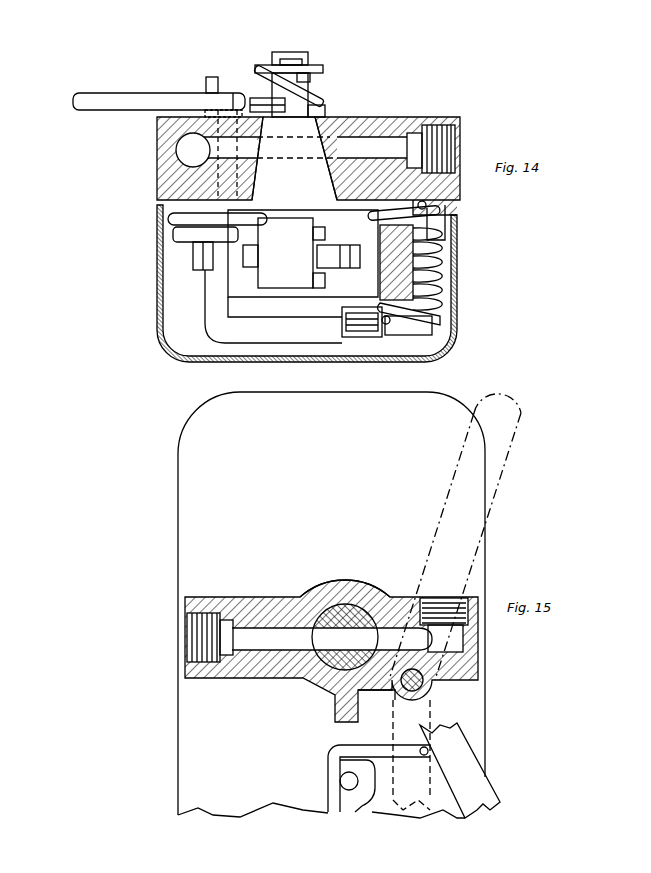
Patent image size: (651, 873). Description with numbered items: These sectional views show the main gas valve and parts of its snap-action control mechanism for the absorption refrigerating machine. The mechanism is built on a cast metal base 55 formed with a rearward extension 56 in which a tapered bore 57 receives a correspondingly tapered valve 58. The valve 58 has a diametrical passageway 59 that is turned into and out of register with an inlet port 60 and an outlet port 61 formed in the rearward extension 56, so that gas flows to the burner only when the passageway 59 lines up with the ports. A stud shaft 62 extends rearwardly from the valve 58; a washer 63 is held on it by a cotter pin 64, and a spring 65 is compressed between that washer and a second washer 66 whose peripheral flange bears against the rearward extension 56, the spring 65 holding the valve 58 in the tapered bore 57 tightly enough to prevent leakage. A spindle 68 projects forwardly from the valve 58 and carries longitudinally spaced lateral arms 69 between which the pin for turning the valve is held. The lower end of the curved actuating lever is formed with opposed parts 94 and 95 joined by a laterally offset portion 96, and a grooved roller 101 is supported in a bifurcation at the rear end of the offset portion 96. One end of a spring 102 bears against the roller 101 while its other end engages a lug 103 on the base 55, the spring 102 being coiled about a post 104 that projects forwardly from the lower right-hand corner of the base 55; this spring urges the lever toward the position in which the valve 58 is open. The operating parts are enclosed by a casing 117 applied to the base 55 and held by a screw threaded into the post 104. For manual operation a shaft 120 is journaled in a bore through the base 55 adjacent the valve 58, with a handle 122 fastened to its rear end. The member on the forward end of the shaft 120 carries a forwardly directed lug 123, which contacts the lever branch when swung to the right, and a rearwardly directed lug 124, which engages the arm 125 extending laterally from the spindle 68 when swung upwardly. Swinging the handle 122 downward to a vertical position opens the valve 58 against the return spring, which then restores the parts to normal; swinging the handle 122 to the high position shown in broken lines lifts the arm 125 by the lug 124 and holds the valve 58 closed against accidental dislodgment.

In FIG. 14, the base 55 is at (157, 192).
In FIG. 15, the base 55 is at (331, 605).
In FIG. 14, the rearward extension 56 is at (403, 117).
In FIG. 15, the rearward extension 56 is at (277, 610).
In FIG. 14, the tapered bore 57 is at (313, 122).
In FIG. 15, the tapered bore 57 is at (363, 603).
In FIG. 14, the tapered valve 58 is at (294, 158).
In FIG. 15, the diametrical passageway 59 is at (342, 637).
In FIG. 14, the inlet port 60 is at (245, 147).
In FIG. 15, the inlet port 60 is at (405, 620).
In FIG. 14, the outlet port 61 is at (373, 143).
In FIG. 15, the outlet port 61 is at (282, 642).
In FIG. 14, the stud shaft 62 is at (310, 83).
In FIG. 14, the washer 63 is at (270, 64).
In FIG. 14, the cotter pin 64 is at (305, 52).
In FIG. 14, the spring 65 is at (257, 75).
In FIG. 14, the washer 66 is at (323, 106).
In FIG. 14, the spindle 68 is at (309, 253).
In FIG. 14, the lateral arms 69 is at (327, 237).
In FIG. 14, the opposed part 94 is at (215, 305).
In FIG. 14, the opposed part 95 is at (312, 297).
In FIG. 14, the laterally offset portion 96 is at (285, 317).
In FIG. 14, the grooved roller 101 is at (363, 323).
In FIG. 14, the spring 102 is at (430, 263).
In FIG. 14, the lug 103 is at (442, 217).
In FIG. 14, the post 104 is at (432, 327).
In FIG. 14, the casing 117 is at (455, 293).
In FIG. 15, the shaft 120 is at (424, 688).
In FIG. 14, the handle 122 is at (137, 96).
In FIG. 15, the handle 122 is at (508, 466).
In FIG. 14, the forwardly directed lug 123 is at (193, 258).
In FIG. 14, the rearwardly directed lug 124 is at (180, 233).
In FIG. 14, the arm 125 is at (168, 218).
In FIG. 15, the arm 125 is at (375, 753).